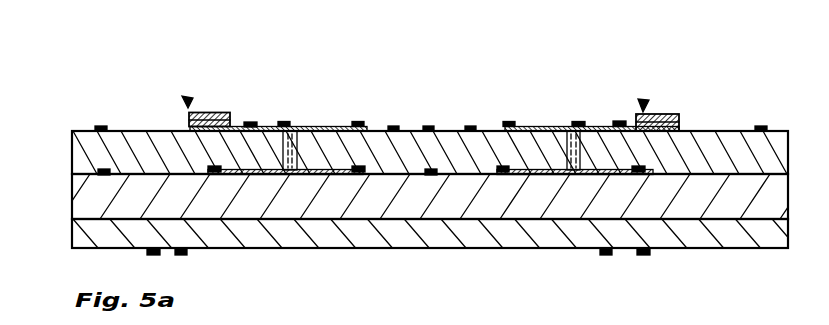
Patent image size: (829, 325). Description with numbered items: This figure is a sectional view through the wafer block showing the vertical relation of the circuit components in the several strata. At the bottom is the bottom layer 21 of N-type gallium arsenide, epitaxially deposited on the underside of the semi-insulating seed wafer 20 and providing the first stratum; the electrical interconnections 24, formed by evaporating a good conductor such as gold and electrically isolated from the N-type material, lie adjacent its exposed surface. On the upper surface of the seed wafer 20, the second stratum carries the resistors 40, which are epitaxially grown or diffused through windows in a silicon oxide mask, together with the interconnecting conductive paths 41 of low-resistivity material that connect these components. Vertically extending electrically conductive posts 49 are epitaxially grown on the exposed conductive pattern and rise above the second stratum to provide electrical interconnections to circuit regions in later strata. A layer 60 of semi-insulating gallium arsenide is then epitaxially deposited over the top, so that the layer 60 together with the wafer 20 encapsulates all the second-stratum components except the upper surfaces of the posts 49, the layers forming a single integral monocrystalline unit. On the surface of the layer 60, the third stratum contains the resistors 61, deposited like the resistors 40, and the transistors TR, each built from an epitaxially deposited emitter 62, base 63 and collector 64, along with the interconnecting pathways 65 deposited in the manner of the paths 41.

The seed wafer 20 is at (77, 208).
The bottom layer 21 is at (77, 240).
The electrical interconnections 24 is at (153, 256).
The resistors 40 is at (313, 176).
The interconnecting conductive paths 41 is at (106, 176).
The vertically extending electrically conductive posts 49 is at (328, 130).
The layer of semi-insulating gallium arsenide 60 is at (77, 157).
The resistors 61 is at (308, 130).
The emitter 62 is at (190, 128).
The base 63 is at (234, 125).
The collector 64 is at (207, 112).
The interconnecting pathways 65 is at (100, 126).
The transistor TR is at (186, 100).